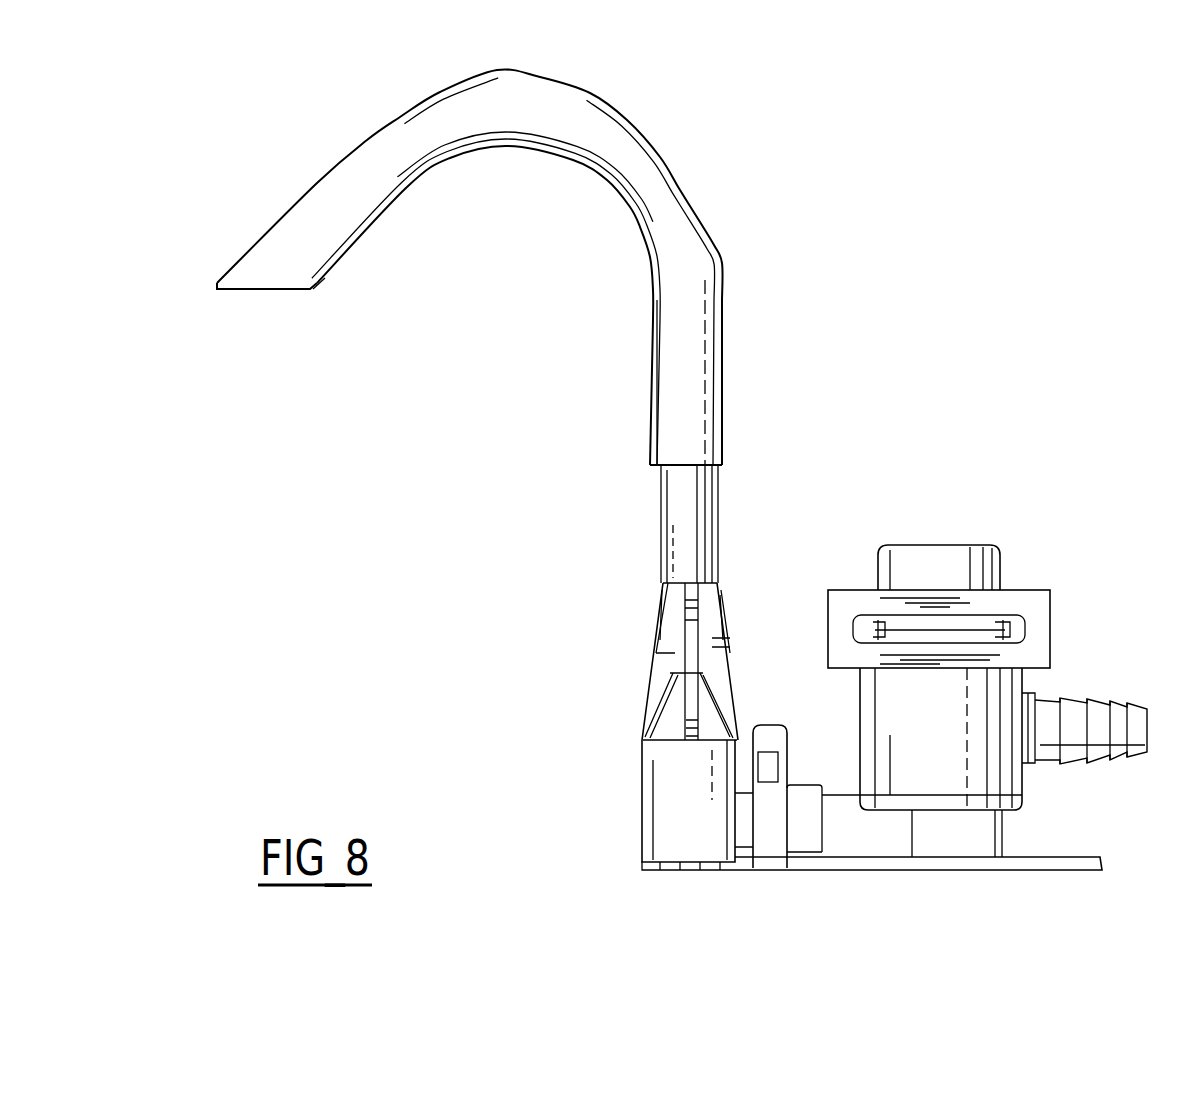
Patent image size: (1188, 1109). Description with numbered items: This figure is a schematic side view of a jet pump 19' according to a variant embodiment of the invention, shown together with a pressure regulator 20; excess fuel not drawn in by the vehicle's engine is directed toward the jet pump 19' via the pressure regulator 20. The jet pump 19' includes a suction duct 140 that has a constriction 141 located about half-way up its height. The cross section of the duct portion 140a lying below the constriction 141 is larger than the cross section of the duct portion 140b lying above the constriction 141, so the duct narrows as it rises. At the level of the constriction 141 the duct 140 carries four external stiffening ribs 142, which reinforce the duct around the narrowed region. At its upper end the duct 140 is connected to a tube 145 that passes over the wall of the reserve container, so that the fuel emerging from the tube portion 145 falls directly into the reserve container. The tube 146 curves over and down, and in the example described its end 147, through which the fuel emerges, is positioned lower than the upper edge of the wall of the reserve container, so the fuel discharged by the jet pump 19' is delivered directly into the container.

The jet pump 19' is at (534, 267).
The pressure regulator 20 is at (998, 544).
The suction duct 140 is at (682, 513).
The duct portion below the constriction 140a is at (667, 795).
The duct portion above the constriction 140b is at (692, 557).
The constriction 141 is at (683, 672).
The external stiffening ribs 142 is at (653, 643).
The tube 145 is at (672, 372).
The tube 146 is at (524, 112).
The end of the tube 147 is at (262, 295).